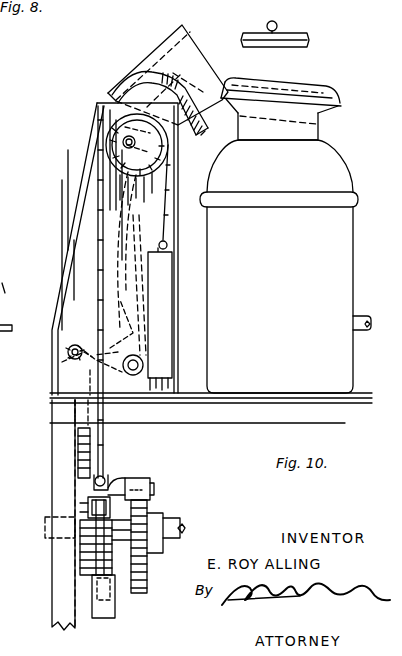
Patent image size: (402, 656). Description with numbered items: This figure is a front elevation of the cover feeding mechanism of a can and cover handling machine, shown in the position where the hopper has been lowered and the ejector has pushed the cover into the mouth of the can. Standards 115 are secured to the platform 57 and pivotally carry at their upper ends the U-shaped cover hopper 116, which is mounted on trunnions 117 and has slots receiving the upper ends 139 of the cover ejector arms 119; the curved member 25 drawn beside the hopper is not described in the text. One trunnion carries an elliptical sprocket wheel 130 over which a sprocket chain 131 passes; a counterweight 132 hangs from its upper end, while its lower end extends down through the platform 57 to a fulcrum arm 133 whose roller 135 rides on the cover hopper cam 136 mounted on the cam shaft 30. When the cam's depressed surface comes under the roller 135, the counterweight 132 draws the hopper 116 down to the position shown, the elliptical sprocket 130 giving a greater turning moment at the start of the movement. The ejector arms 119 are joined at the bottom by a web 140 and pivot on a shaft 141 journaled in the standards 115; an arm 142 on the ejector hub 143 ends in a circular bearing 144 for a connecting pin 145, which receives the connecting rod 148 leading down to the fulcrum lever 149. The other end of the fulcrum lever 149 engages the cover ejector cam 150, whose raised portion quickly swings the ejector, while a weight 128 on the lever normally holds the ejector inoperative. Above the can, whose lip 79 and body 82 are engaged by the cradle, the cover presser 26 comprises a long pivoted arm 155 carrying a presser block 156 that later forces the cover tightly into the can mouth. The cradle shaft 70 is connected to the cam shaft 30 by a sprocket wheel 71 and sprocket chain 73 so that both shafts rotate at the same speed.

The hood 25 is at (140, 57).
The cover presser 26 is at (294, 31).
The cam shaft 30 is at (45, 528).
The platform 57 is at (55, 396).
The cradle shaft 70 is at (365, 315).
The sprocket wheel 71 is at (85, 560).
The sprocket chain 73 is at (82, 452).
The lip of the can 79 is at (318, 113).
The body of the can 82 is at (343, 256).
The standards 115 is at (88, 160).
The cover hopper 116 is at (205, 57).
The trunnions 117 is at (123, 140).
The cover ejector arms 119 is at (128, 236).
The weight 128 is at (115, 608).
The elliptical sprocket wheel 130 is at (160, 150).
The sprocket chain 131 is at (100, 240).
The counterweight 132 is at (160, 284).
The fulcrum arm 133 is at (118, 478).
The roller 135 is at (150, 478).
The cover hopper cam 136 is at (142, 520).
The upper ends of the cover ejector arms 139 is at (203, 124).
The web 140 is at (136, 322).
The shaft 141 is at (138, 375).
The arm 142 is at (94, 376).
The hub 143 is at (115, 347).
The circular bearing 144 is at (66, 360).
The connecting pin 145 is at (62, 349).
The connecting rod 148 is at (75, 412).
The fulcrum lever 149 is at (88, 508).
The cover ejector cam 150 is at (115, 535).
The presser arm 155 is at (280, 8).
The presser block 156 is at (275, 46).